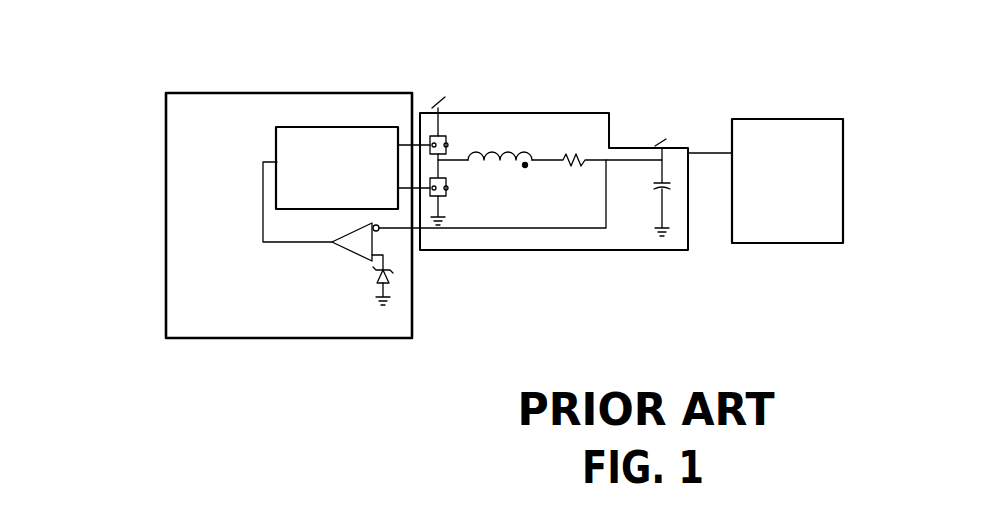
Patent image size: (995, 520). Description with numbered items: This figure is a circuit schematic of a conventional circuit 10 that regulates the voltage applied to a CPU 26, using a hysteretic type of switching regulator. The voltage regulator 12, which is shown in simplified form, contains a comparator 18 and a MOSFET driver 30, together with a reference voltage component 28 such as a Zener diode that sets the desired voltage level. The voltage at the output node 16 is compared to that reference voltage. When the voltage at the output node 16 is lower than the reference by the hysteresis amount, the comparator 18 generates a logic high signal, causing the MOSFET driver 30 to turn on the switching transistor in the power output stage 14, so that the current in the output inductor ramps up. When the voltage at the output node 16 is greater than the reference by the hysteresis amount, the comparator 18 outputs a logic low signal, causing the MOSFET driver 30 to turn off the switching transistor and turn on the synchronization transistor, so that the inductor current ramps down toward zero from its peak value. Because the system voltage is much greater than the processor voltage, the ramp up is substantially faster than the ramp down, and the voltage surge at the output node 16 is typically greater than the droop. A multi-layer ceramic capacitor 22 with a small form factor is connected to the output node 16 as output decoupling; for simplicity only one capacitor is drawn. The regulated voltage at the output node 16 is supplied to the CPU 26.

The circuit 10 is at (520, 46).
The voltage regulator 12 is at (266, 93).
The power output stage 14 is at (542, 113).
The output node 16 is at (697, 153).
The comparator 18 is at (342, 250).
The multi-layer ceramic capacitor 22 is at (633, 214).
The CPU 26 is at (843, 198).
The zener reference diode 28 is at (393, 282).
The MOSFET driver 30 is at (275, 150).